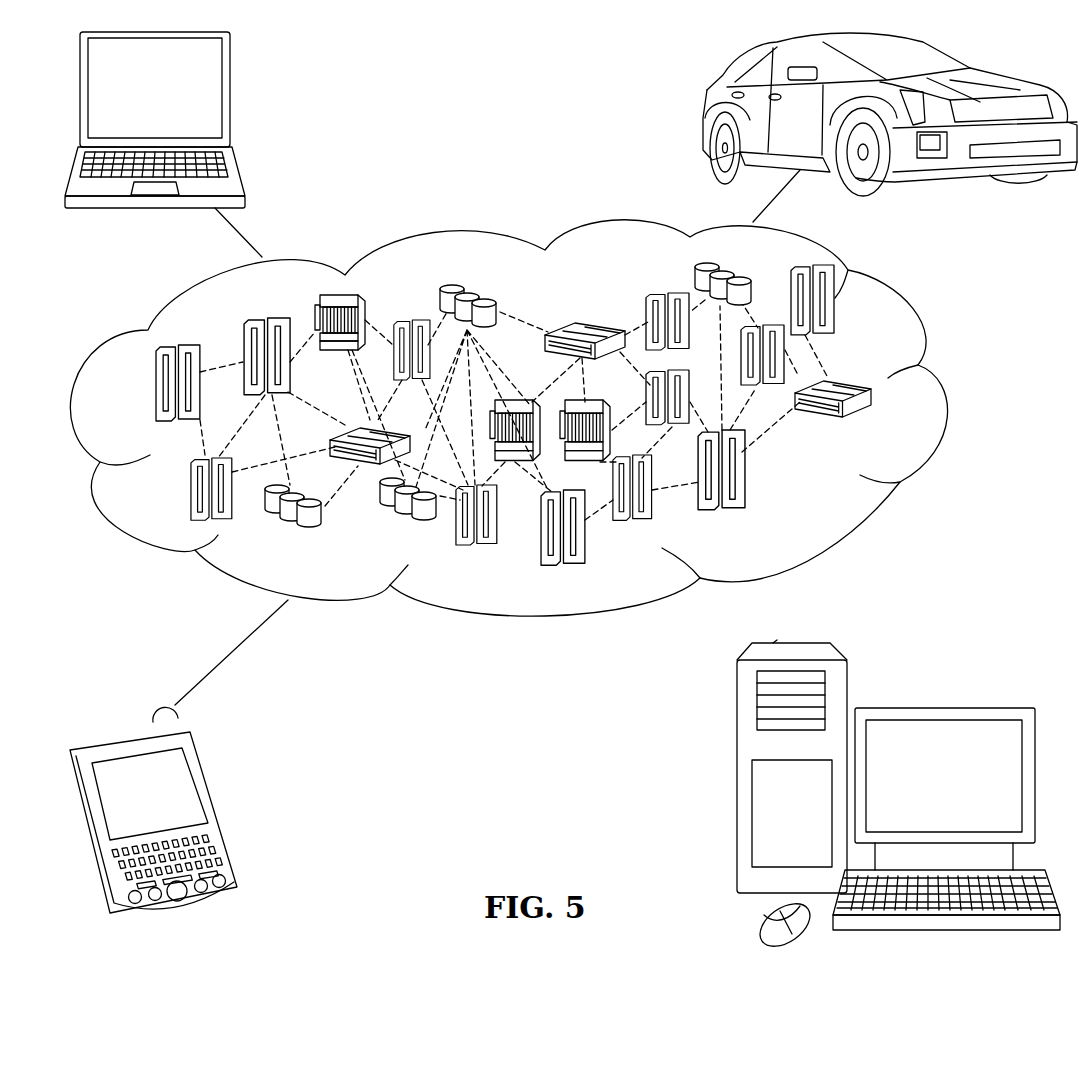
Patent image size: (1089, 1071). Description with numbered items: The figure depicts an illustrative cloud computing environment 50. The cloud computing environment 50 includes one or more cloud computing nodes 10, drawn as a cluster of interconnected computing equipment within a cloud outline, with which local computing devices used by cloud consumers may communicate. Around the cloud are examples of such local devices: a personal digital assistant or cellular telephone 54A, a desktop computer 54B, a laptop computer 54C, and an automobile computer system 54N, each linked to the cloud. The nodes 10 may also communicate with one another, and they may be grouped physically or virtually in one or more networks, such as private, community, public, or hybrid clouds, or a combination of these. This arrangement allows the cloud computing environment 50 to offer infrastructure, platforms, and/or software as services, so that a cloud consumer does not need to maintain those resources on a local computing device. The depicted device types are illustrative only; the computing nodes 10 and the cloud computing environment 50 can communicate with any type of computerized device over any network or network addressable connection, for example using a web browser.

The cloud computing environment 50 is at (940, 393).
The cloud computing node 10 is at (880, 427).
The personal digital assistant or cellular telephone 54A is at (219, 810).
The desktop computer 54B is at (940, 706).
The laptop computer 54C is at (231, 97).
The automobile computer system 54N is at (703, 118).